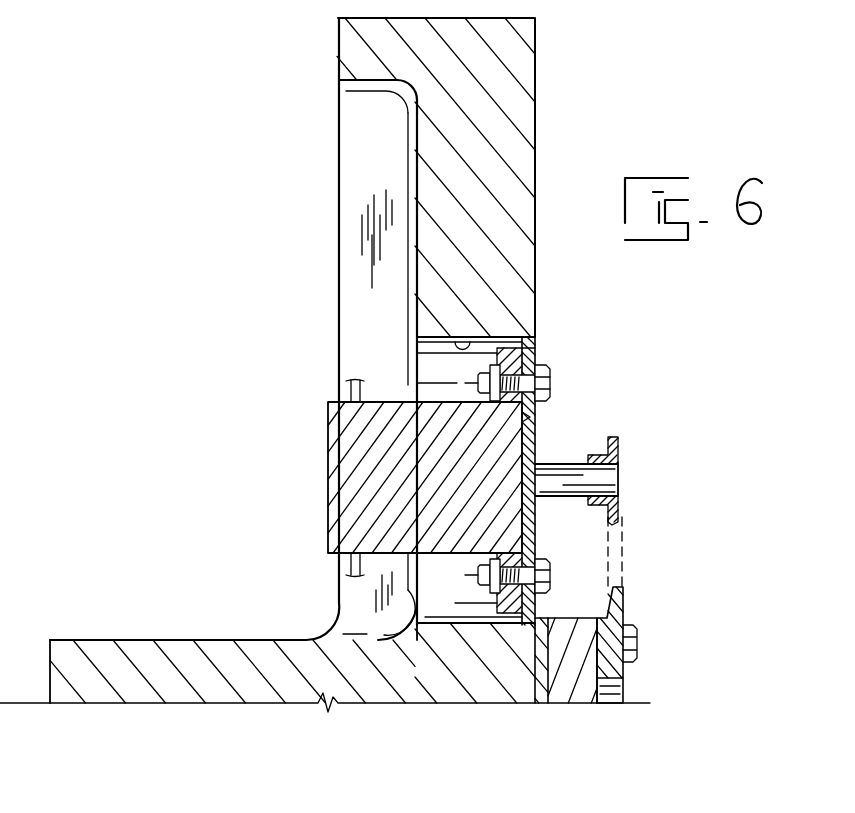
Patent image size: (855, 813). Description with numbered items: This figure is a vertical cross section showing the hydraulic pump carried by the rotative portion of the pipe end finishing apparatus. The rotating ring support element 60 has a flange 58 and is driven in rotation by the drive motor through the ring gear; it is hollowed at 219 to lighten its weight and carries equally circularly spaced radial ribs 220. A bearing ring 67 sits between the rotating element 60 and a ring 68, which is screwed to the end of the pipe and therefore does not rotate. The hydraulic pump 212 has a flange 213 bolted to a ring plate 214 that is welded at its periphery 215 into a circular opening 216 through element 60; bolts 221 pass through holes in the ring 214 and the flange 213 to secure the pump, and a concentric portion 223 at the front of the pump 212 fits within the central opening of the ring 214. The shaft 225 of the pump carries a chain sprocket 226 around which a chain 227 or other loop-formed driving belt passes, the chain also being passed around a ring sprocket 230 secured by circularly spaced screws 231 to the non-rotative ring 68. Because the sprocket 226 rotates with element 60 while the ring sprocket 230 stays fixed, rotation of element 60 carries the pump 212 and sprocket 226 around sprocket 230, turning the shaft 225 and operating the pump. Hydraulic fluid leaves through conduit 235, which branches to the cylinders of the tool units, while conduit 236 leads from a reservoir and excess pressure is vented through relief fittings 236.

The flange 58 is at (167, 639).
The rotating ring support element 60 is at (538, 72).
The bearing ring 67 is at (543, 705).
The ring 68 is at (572, 705).
The hydraulic pump 212 is at (328, 470).
The flange 213 is at (508, 348).
The ring plate 214 is at (537, 362).
The periphery 215 is at (537, 343).
The circular opening 216 is at (488, 337).
The hollowed portion 219 is at (413, 157).
The radial ribs 220 is at (339, 128).
The bolts 221 is at (551, 383).
The concentric portion 223 is at (537, 433).
The shaft 225 is at (573, 464).
The chain sprocket 226 is at (622, 448).
The chain 227 is at (624, 548).
The ring sprocket 230 is at (617, 610).
The screws 231 is at (638, 645).
The conduit 235 is at (349, 390).
The conduit 236 is at (349, 562).